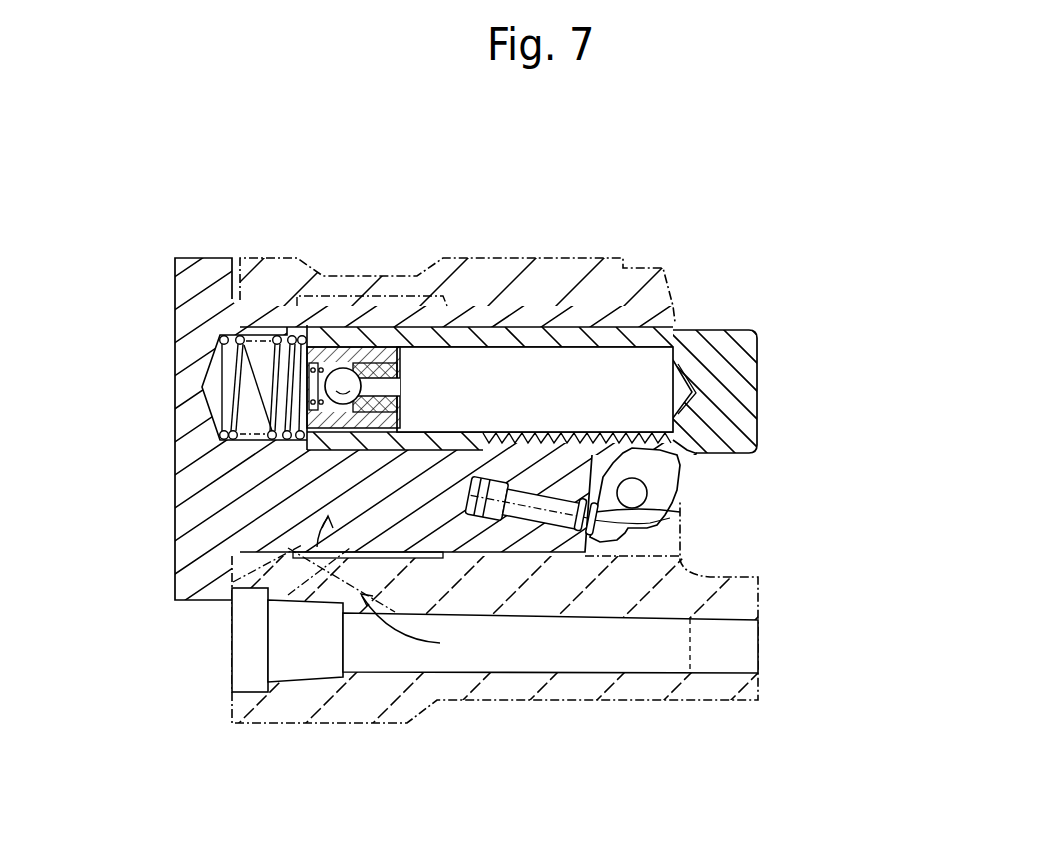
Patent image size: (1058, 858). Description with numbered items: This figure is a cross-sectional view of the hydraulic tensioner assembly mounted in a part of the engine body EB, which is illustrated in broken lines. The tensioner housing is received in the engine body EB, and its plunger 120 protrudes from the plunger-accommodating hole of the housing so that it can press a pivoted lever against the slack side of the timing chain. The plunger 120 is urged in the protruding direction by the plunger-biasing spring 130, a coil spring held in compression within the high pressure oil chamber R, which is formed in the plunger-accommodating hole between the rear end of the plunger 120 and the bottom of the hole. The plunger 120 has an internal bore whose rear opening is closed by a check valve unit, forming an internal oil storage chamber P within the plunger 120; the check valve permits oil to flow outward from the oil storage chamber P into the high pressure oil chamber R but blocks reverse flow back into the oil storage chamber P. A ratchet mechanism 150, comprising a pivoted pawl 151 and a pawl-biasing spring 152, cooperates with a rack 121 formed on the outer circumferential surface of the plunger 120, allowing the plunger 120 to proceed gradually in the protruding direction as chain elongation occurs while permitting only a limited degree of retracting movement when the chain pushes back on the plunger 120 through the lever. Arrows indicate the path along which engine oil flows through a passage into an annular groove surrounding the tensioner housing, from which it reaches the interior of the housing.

The plunger 120 is at (529, 449).
The rack 121 is at (717, 391).
The plunger-biasing spring 130 is at (178, 375).
The ratchet mechanism 150 is at (711, 508).
The pivoted pawl 151 is at (729, 495).
The pawl-biasing spring 152 is at (860, 472).
The oil storage chamber P is at (555, 406).
The high pressure oil chamber R is at (92, 434).
The engine body EB is at (554, 278).